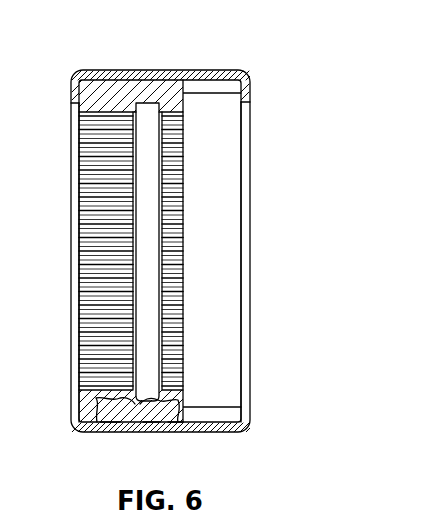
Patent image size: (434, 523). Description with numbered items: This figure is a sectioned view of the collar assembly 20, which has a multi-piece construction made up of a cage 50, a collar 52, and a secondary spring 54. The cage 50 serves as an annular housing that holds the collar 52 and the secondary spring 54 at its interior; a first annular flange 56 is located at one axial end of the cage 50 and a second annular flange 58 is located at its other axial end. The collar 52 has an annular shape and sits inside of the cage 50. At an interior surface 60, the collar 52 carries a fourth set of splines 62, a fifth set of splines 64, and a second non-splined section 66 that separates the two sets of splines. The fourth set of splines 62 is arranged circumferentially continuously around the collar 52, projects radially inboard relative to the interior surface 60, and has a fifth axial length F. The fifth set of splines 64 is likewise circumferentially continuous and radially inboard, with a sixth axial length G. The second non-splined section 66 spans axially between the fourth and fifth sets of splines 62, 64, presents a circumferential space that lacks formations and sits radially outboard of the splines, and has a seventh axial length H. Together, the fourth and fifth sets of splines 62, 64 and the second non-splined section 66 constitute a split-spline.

The collar assembly 20 is at (246, 125).
The cage 50 is at (170, 75).
The collar 52 is at (112, 98).
The secondary spring 54 is at (230, 193).
The first annular flange 56 is at (247, 158).
The second annular flange 58 is at (77, 303).
The interior surface 60 is at (159, 370).
The fourth set of splines 62 is at (173, 207).
The fifth set of splines 64 is at (110, 218).
The second non-splined section 66 is at (148, 265).
The sixth axial length G is at (112, 432).
The seventh axial length H is at (153, 432).
The fifth axial length F is at (177, 432).